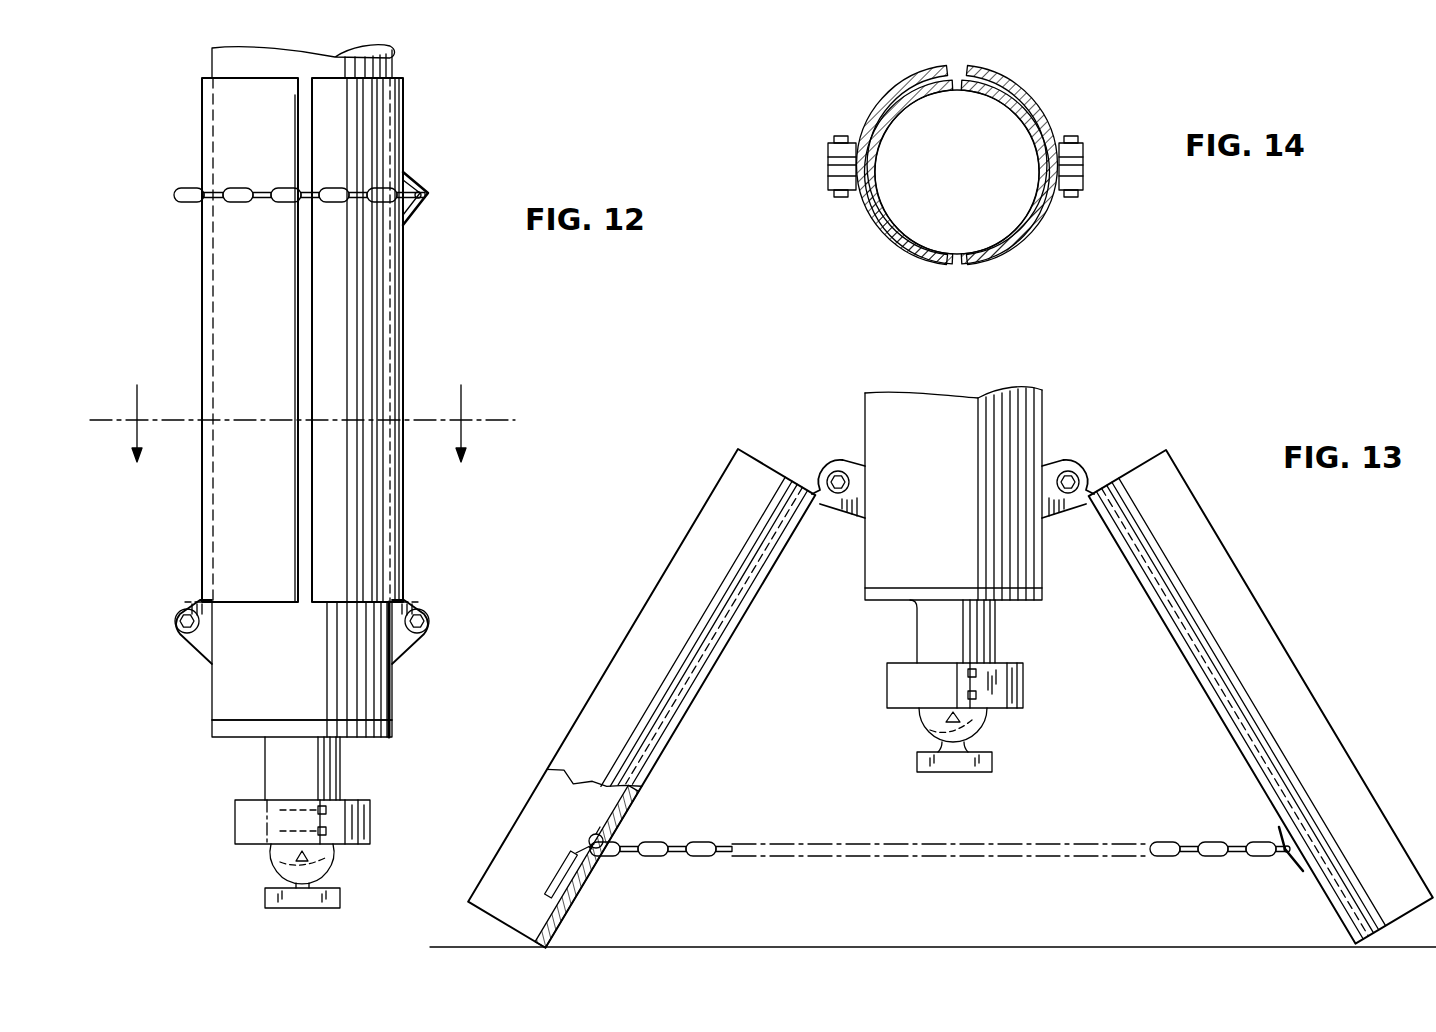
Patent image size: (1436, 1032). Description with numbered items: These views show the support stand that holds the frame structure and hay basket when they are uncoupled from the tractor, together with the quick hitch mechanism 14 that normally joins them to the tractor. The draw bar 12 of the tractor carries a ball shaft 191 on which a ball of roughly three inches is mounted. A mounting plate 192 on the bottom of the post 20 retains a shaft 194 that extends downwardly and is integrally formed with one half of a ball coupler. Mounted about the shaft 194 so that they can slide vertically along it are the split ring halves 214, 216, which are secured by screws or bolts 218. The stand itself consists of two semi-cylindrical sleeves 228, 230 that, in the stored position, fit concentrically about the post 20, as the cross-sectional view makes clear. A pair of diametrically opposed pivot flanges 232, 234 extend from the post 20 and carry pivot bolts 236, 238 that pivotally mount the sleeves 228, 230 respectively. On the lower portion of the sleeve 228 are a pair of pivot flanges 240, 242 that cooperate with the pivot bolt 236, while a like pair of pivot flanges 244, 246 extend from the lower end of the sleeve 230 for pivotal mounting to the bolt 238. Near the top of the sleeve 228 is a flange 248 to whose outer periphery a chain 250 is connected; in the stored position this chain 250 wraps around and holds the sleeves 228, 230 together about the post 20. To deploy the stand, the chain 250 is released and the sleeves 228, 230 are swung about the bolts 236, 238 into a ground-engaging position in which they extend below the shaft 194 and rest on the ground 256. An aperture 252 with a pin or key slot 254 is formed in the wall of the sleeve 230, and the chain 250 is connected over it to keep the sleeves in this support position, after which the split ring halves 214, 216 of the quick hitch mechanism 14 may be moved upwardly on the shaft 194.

In FIG. 12, the draw bar 12 is at (330, 902).
In FIG. 13, the draw bar 12 is at (962, 765).
In FIG. 12, the quick hitch mechanism 14 is at (302, 423).
In FIG. 13, the quick hitch mechanism 14 is at (913, 727).
In FIG. 12, the post 20 is at (368, 690).
In FIG. 14, the post 20 is at (958, 266).
In FIG. 13, the post 20 is at (872, 565).
In FIG. 12, the ball shaft 191 is at (282, 881).
In FIG. 12, the mounting plate 192 is at (215, 722).
In FIG. 12, the shaft 194 is at (290, 755).
In FIG. 13, the shaft 194 is at (975, 633).
In FIG. 12, the split ring half 214 is at (360, 832).
In FIG. 13, the split ring half 214 is at (1023, 690).
In FIG. 12, the split ring half 216 is at (250, 814).
In FIG. 13, the split ring half 216 is at (900, 690).
In FIG. 12, the screws or bolts 218 is at (326, 831).
In FIG. 12, the semi-cylindrical sleeve 228 is at (370, 313).
In FIG. 14, the semi-cylindrical sleeve 228 is at (1025, 235).
In FIG. 13, the semi-cylindrical sleeve 228 is at (1240, 600).
In FIG. 12, the semi-cylindrical sleeve 230 is at (225, 308).
In FIG. 14, the semi-cylindrical sleeve 230 is at (900, 240).
In FIG. 13, the semi-cylindrical sleeve 230 is at (660, 590).
In FIG. 12, the pivot flange 232 is at (410, 648).
In FIG. 14, the pivot flange 232 is at (1080, 168).
In FIG. 13, the pivot flange 232 is at (1062, 468).
In FIG. 12, the pivot flange 234 is at (205, 645).
In FIG. 14, the pivot flange 234 is at (828, 170).
In FIG. 13, the pivot flange 234 is at (857, 506).
In FIG. 12, the pivot bolt 236 is at (427, 618).
In FIG. 14, the pivot bolt 236 is at (1074, 199).
In FIG. 12, the pivot bolt 238 is at (178, 620).
In FIG. 14, the pivot bolt 238 is at (838, 199).
In FIG. 14, the pivot flange 240 is at (1084, 146).
In FIG. 12, the pivot flange 242 is at (418, 600).
In FIG. 14, the pivot flange 242 is at (1084, 182).
In FIG. 13, the pivot flange 242 is at (1050, 506).
In FIG. 14, the pivot flange 244 is at (828, 146).
In FIG. 12, the pivot flange 246 is at (196, 592).
In FIG. 14, the pivot flange 246 is at (828, 182).
In FIG. 13, the pivot flange 246 is at (826, 468).
In FIG. 12, the flange 248 is at (410, 185).
In FIG. 13, the flange 248 is at (1290, 863).
In FIG. 12, the chain 250 is at (365, 208).
In FIG. 13, the chain 250 is at (700, 841).
In FIG. 13, the aperture 252 is at (615, 823).
In FIG. 13, the pin or key slot 254 is at (605, 857).
In FIG. 13, the ground 256 is at (1035, 947).